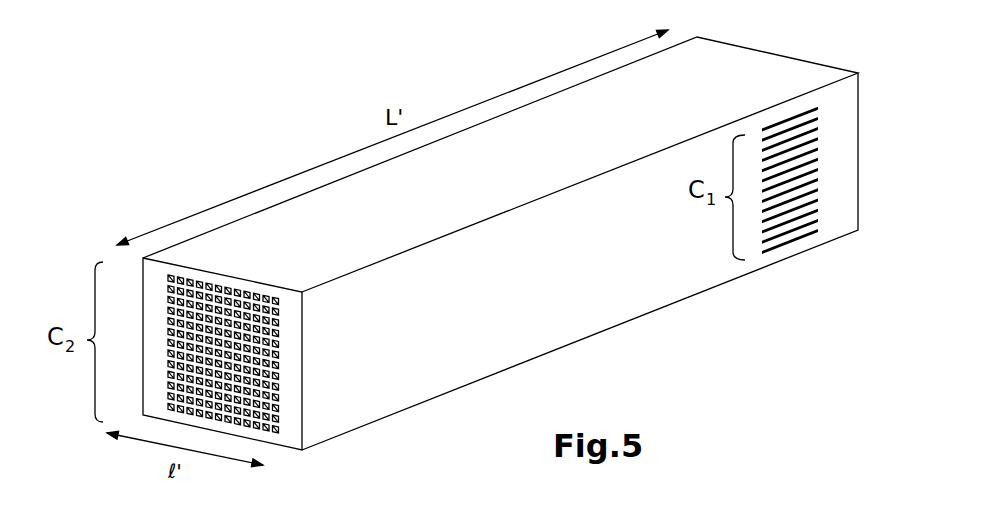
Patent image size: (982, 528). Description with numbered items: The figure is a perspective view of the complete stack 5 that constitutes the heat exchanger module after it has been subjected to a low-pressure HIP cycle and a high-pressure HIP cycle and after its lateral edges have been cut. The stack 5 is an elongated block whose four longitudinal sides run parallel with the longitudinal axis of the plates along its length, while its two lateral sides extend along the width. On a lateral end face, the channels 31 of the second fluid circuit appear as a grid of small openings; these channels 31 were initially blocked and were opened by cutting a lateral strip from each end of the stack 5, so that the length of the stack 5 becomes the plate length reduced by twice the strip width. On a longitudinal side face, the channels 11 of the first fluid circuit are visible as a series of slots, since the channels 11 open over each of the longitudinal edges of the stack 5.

The stack 5 is at (266, 150).
The channels of the second fluid circuit 31 is at (230, 283).
The channels of the first fluid circuit 11 is at (802, 215).